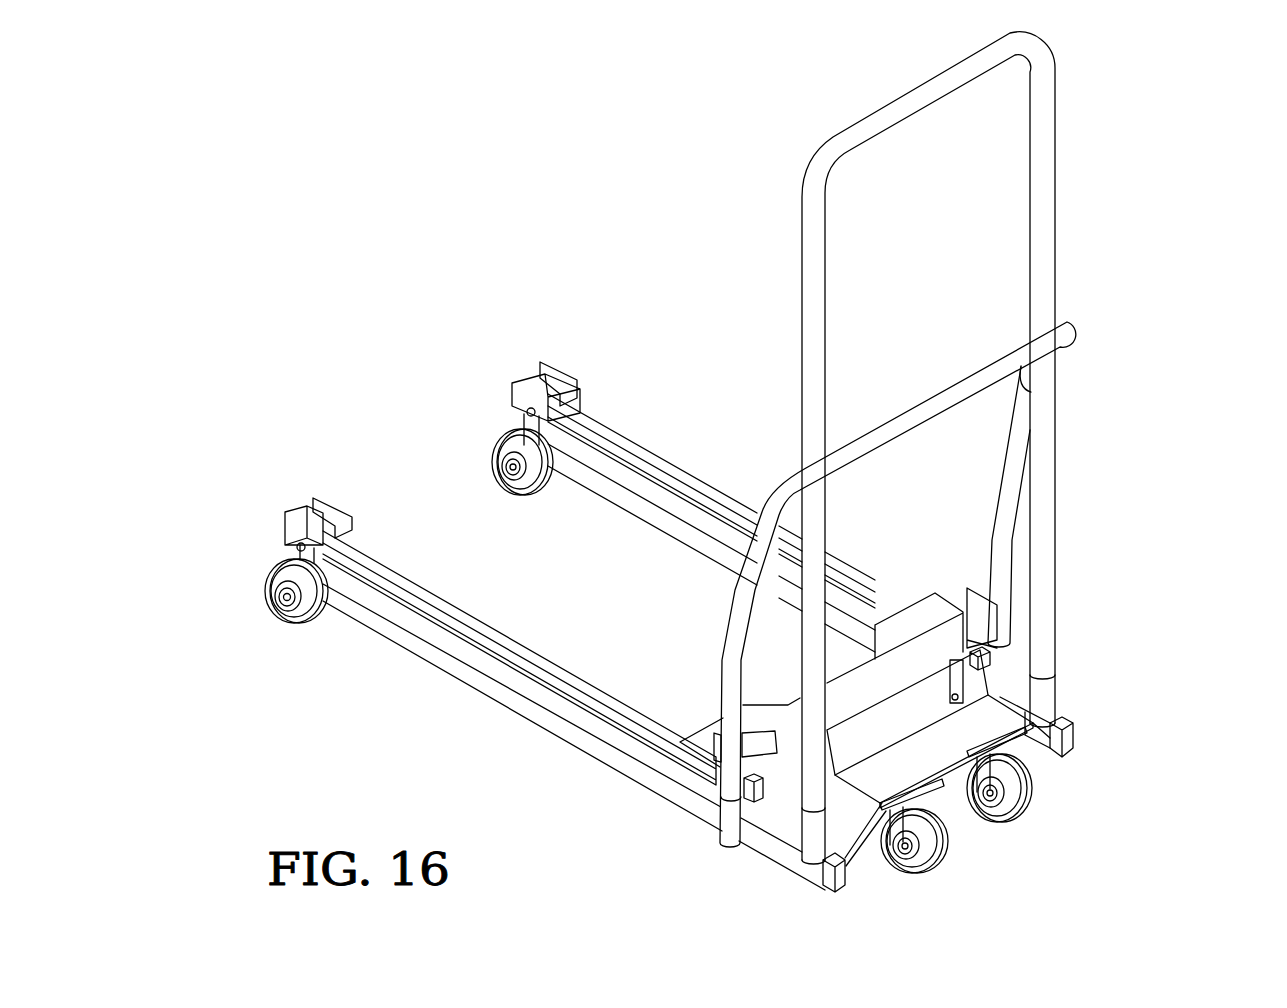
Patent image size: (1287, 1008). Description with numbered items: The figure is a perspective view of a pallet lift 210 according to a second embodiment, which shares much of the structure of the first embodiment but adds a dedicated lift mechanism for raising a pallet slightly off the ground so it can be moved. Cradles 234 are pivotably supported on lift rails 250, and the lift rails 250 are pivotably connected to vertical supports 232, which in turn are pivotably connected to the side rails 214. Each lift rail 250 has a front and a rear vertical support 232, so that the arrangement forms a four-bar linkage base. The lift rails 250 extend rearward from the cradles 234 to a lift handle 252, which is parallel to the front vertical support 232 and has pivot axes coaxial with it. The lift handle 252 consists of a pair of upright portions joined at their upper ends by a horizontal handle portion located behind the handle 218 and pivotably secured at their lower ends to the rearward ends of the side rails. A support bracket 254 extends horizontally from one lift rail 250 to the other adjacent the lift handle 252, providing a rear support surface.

The pallet lift 210 is at (1093, 178).
The side rails 214 is at (507, 708).
The handle 218 is at (813, 165).
The vertical supports 232 is at (300, 547).
The cradles 234 is at (280, 523).
The lift rails 250 is at (511, 638).
The lift handle 252 is at (722, 666).
The support bracket 254 is at (862, 660).